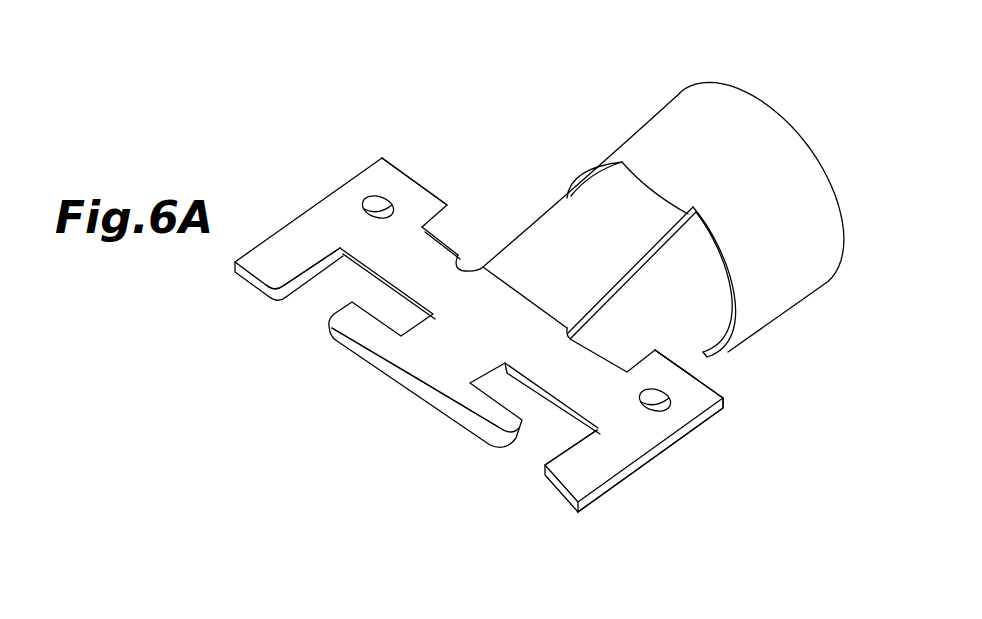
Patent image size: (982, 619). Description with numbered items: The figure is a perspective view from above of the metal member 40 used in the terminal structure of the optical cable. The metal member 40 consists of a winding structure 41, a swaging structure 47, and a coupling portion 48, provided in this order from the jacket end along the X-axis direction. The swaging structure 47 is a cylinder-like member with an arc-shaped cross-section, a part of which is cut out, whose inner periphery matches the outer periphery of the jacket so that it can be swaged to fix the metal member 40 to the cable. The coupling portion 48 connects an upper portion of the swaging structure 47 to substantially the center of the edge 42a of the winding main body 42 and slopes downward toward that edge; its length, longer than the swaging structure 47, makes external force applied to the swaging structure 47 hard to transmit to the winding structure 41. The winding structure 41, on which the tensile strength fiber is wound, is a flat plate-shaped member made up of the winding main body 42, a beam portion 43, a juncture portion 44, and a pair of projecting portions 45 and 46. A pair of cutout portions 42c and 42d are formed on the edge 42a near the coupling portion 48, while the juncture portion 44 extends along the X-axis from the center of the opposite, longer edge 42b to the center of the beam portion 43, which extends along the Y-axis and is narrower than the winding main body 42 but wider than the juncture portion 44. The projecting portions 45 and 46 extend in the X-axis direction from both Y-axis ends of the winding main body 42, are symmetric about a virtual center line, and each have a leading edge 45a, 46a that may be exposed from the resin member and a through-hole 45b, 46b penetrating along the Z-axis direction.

The metal member 40 is at (442, 99).
The winding structure 41 is at (697, 434).
The winding main body 42 is at (383, 300).
The edge 42a is at (447, 228).
The edge 42b is at (338, 262).
The cutout portion 42c is at (575, 344).
The cutout portion 42d is at (470, 266).
The beam portion 43 is at (423, 373).
The juncture portion 44 is at (453, 356).
The projecting portion 45 is at (632, 443).
The leading edge 45a is at (717, 387).
The through-hole 45b is at (672, 392).
The projecting portion 46 is at (328, 215).
The leading edge 46a is at (398, 167).
The through-hole 46b is at (377, 197).
The swaging structure 47 is at (672, 128).
The coupling portion 48 is at (569, 226).